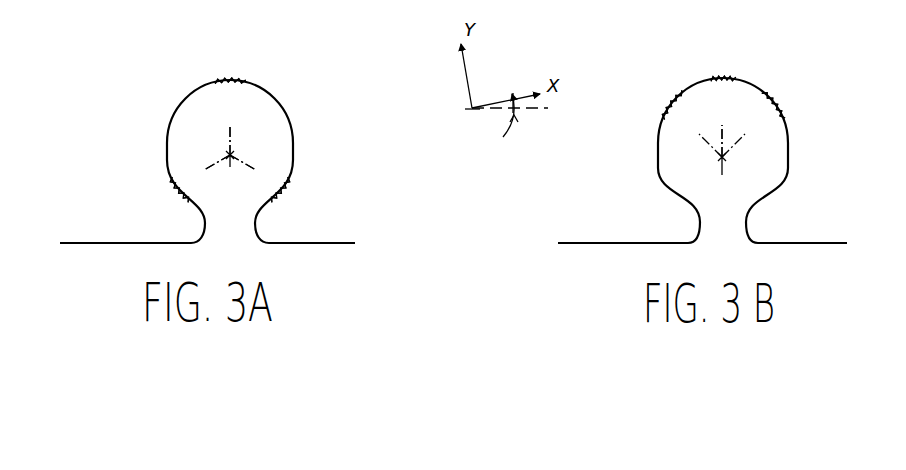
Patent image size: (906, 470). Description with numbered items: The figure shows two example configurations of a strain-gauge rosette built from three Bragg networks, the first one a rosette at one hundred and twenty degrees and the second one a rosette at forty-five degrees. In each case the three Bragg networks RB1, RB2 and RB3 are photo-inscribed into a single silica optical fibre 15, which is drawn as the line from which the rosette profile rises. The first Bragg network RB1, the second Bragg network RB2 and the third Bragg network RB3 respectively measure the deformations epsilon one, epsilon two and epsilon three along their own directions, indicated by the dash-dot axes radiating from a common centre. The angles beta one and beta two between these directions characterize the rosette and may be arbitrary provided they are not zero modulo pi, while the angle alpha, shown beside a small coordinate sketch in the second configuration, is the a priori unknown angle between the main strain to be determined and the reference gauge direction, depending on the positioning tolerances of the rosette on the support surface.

In FIG. 3A, the optical fibre 15 is at (83, 243).
In FIG. 3B, the optical fibre 15 is at (592, 243).
In FIG. 3A, the first Bragg network RB1 is at (230, 155).
In FIG. 3B, the first Bragg network RB1 is at (722, 157).
In FIG. 3A, the second Bragg network RB2 is at (230, 155).
In FIG. 3B, the second Bragg network RB2 is at (722, 157).
In FIG. 3A, the third Bragg network RB3 is at (230, 155).
In FIG. 3B, the third Bragg network RB3 is at (722, 157).